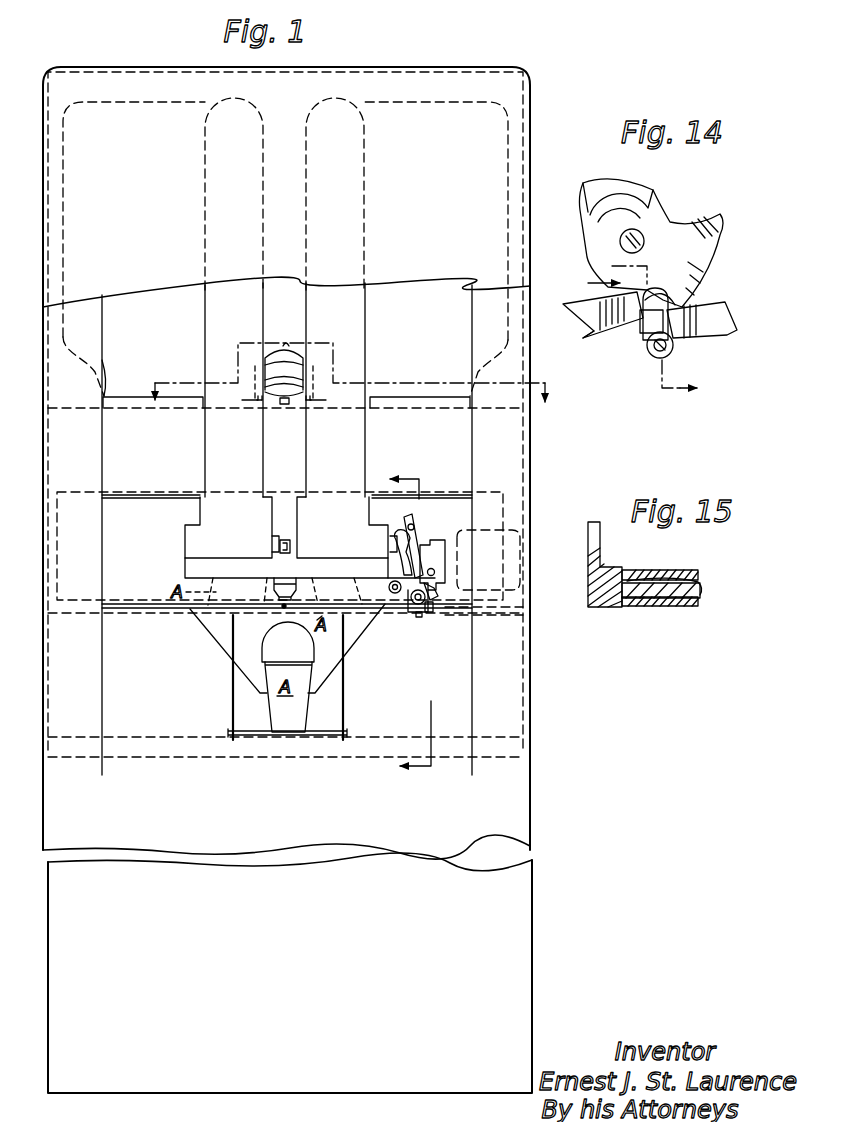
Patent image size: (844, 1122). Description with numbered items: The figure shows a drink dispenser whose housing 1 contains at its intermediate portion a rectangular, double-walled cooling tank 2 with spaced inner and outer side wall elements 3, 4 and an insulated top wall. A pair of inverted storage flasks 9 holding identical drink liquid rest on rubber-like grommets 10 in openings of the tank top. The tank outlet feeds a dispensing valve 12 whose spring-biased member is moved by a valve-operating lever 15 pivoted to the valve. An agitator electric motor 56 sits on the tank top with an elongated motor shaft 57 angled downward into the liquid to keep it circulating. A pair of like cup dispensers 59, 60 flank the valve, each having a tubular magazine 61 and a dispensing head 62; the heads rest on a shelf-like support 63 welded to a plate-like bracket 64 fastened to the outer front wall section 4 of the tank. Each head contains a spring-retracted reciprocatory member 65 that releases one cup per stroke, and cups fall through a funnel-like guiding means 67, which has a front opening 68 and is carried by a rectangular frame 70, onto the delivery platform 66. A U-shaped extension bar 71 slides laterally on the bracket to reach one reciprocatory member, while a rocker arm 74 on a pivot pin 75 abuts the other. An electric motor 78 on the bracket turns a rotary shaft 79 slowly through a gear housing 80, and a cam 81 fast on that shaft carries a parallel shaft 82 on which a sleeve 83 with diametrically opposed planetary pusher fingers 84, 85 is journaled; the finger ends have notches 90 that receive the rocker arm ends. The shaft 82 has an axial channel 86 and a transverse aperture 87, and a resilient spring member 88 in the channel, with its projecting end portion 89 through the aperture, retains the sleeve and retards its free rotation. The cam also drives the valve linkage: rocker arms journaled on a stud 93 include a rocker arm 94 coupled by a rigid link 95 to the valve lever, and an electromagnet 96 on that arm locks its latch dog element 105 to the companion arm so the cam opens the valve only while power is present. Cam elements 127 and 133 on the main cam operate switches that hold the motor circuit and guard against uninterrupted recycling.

In FIG. 1, the dispenser housing 1 is at (452, 166).
In FIG. 1, the cooling tank 2 is at (553, 463).
In FIG. 1, the inner side wall element 3 is at (404, 613).
In FIG. 1, the outer side wall element 4 is at (129, 452).
In FIG. 1, the storage flasks 9 is at (162, 327).
In FIG. 1, the grommets 10 is at (168, 404).
In FIG. 1, the dispensing valve 12 is at (284, 608).
In FIG. 1, the valve-operating lever 15 is at (269, 586).
In FIG. 14, the valve-operating lever 15 is at (640, 333).
In FIG. 1, the electric motor 56 is at (274, 382).
In FIG. 1, the motor shaft 57 is at (280, 408).
In FIG. 1, the cup dispenser 59 is at (203, 463).
In FIG. 1, the cup dispenser 60 is at (367, 434).
In FIG. 1, the tubular magazine 61 is at (242, 316).
In FIG. 1, the dispensing head 62 is at (220, 548).
In FIG. 1, the shelf-like support 63 is at (196, 573).
In FIG. 1, the plate-like bracket 64 is at (132, 537).
In FIG. 1, the reciprocatory member 65 is at (277, 532).
In FIG. 1, the platform 66 is at (247, 735).
In FIG. 1, the funnel-like guiding means 67 is at (220, 627).
In FIG. 1, the opening 68 is at (260, 650).
In FIG. 1, the rectangular frame 70 is at (230, 702).
In FIG. 1, the extension bar 71 is at (295, 544).
In FIG. 1, the rocker arm 74 is at (395, 565).
In FIG. 1, the pivot pin 75 is at (395, 604).
In FIG. 1, the electric motor 78 is at (462, 549).
In FIG. 14, the rotary shaft 79 is at (641, 236).
In FIG. 1, the gear housing 80 is at (444, 550).
In FIG. 1, the cam 81 is at (433, 598).
In FIG. 14, the cam 81 is at (683, 277).
In FIG. 15, the cam 81 is at (599, 541).
In FIG. 14, the shaft 82 is at (653, 352).
In FIG. 15, the shaft 82 is at (650, 594).
In FIG. 14, the sleeve 83 is at (648, 331).
In FIG. 15, the sleeve 83 is at (676, 601).
In FIG. 14, the pusher finger 84 is at (705, 312).
In FIG. 14, the pusher finger 85 is at (597, 335).
In FIG. 15, the channel 86 is at (702, 580).
In FIG. 15, the transverse aperture 87 is at (704, 590).
In FIG. 14, the spring member 88 is at (676, 346).
In FIG. 15, the spring member 88 is at (630, 582).
In FIG. 15, the projecting end portion 89 is at (703, 597).
In FIG. 14, the notch 90 is at (728, 314).
In FIG. 1, the stud 93 is at (417, 522).
In FIG. 1, the rocker arm 94 is at (420, 558).
In FIG. 1, the rigid link 95 is at (411, 619).
In FIG. 1, the electromagnet 96 is at (429, 613).
In FIG. 1, the latch dog element 105 is at (418, 617).
In FIG. 14, the cam element 127 is at (600, 261).
In FIG. 14, the cam 133 is at (600, 186).